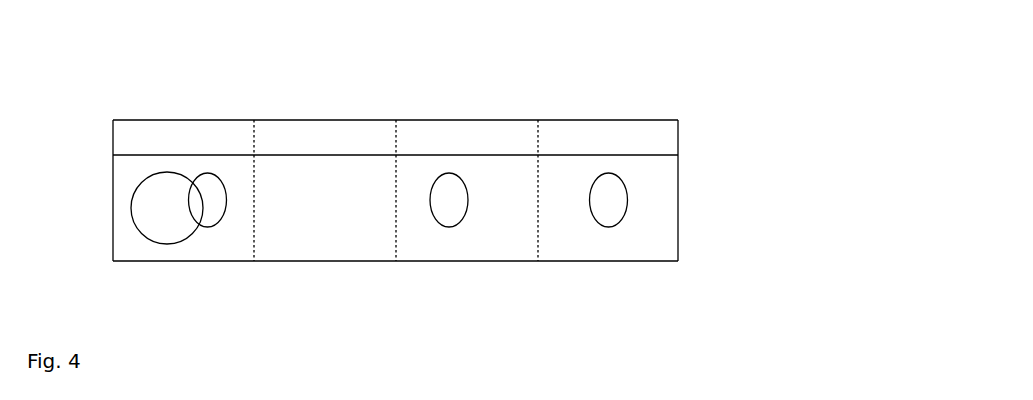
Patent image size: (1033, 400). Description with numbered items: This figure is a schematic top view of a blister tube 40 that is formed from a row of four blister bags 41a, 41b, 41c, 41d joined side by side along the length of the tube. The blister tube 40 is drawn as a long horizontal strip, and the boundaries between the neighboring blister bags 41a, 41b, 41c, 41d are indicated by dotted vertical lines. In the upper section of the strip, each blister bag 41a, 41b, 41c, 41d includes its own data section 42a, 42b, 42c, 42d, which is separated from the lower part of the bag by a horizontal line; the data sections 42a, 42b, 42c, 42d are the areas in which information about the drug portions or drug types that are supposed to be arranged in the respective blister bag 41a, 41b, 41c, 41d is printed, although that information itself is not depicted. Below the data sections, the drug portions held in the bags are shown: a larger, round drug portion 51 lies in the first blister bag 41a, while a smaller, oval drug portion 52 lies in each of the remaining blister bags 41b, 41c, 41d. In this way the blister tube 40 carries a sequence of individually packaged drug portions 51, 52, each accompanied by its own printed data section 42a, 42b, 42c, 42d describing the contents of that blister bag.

The blister tube 40 is at (464, 160).
The blister bag 41a is at (131, 243).
The blister bag 41b is at (273, 243).
The blister bag 41c is at (413, 243).
The blister bag 41d is at (555, 243).
The data section 42a is at (130, 137).
The data section 42b is at (270, 137).
The data section 42c is at (413, 137).
The data section 42d is at (553, 137).
The drug portion 51 is at (167, 208).
The drug portion 52 is at (307, 210).